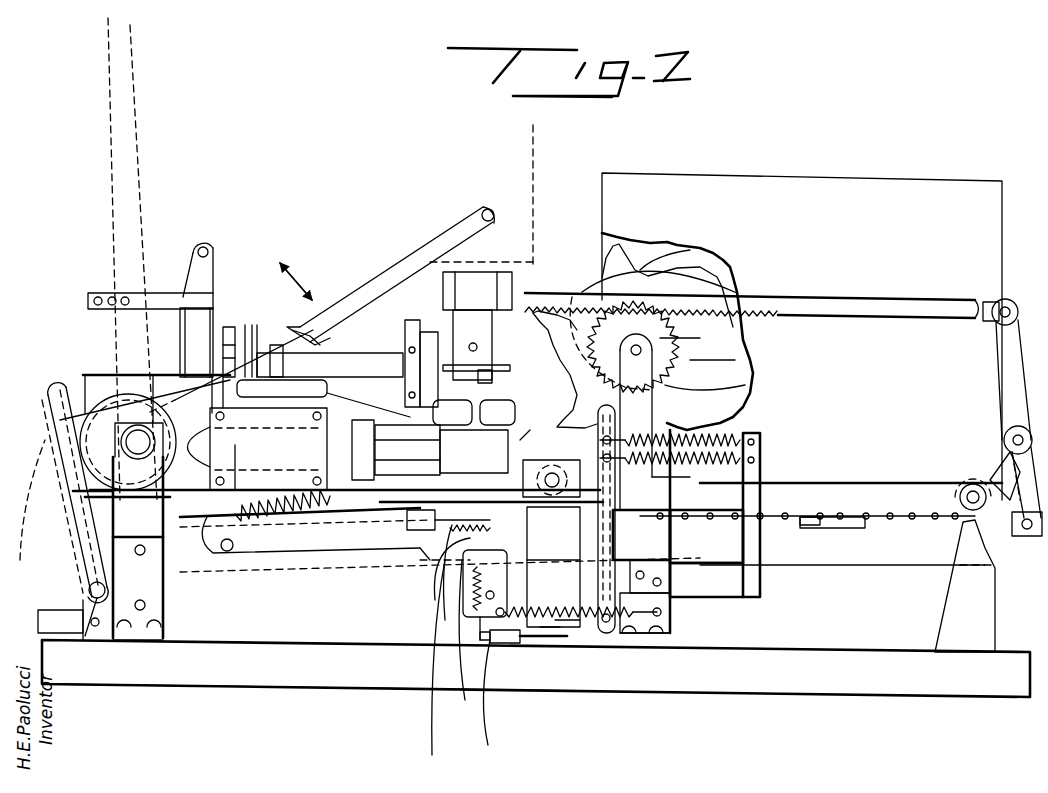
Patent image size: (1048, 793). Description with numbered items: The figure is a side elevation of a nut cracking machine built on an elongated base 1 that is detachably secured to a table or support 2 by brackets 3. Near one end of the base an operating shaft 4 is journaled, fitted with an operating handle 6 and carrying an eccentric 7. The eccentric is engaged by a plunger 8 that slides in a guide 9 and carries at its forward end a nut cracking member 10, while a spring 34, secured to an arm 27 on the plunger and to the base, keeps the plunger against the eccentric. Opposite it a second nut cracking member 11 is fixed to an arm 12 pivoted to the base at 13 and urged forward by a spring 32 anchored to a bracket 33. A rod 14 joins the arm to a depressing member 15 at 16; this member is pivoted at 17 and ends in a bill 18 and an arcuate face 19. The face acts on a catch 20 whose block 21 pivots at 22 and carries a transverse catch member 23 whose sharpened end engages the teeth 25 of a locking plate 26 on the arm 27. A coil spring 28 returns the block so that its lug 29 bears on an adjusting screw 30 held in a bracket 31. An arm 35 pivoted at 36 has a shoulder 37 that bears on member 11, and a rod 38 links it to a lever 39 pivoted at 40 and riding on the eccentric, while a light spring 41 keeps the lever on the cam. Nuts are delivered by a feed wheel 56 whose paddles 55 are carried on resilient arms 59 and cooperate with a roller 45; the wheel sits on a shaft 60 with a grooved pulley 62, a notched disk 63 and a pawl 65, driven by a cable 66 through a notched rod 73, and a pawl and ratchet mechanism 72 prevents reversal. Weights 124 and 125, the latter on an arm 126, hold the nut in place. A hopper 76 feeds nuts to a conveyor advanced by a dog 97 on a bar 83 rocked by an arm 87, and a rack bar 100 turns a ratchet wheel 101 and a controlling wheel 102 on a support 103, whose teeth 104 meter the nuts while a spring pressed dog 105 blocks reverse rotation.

The base 1 is at (283, 627).
The table or support 2 is at (343, 670).
The brackets 3 is at (150, 630).
The operating shaft 4 is at (531, 140).
The operating handle 6 is at (338, 303).
The eccentric 7 is at (75, 414).
The plunger 8 is at (200, 453).
The guide 9 is at (268, 449).
The nut cracking member 10 is at (390, 365).
The nut cracking member 11 is at (530, 430).
The arm 12 is at (553, 566).
The pivot 13 is at (560, 627).
The rod 14 is at (360, 552).
The depressing member 15 is at (303, 560).
The pivot 16 is at (217, 507).
The pivot 17 is at (230, 560).
The bill 18 is at (480, 525).
The arcuate face 19 is at (452, 572).
The catch 20 is at (446, 672).
The block 21 is at (485, 583).
The pivot 22 is at (482, 625).
The catch member 23 is at (505, 555).
The teeth 25 is at (415, 565).
The locking plate 26 is at (390, 570).
The arm 27 is at (405, 500).
The coil spring 28 is at (560, 615).
The lug 29 is at (486, 705).
The adjusting screw 30 is at (520, 622).
The bracket 31 is at (515, 643).
The spring 32 is at (690, 468).
The bracket 33 is at (762, 468).
The spring 34 is at (285, 522).
The arm 35 is at (604, 553).
The pivot 36 is at (636, 640).
The shoulder 37 is at (613, 483).
The rod 38 is at (553, 567).
The lever 39 is at (62, 487).
The pivot 40 is at (95, 612).
The spring 41 is at (720, 430).
The roller 45 is at (507, 473).
The paddles 55 is at (510, 285).
The feed wheel 56 is at (492, 340).
The resilient arms 59 is at (472, 345).
The shaft 60 is at (340, 360).
The grooved pulley 62 is at (250, 340).
The disk 63 is at (186, 375).
The pawl 65 is at (230, 327).
The cable 66 is at (315, 327).
The pawl and ratchet mechanism 72 is at (500, 365).
The notched rod 73 is at (202, 273).
The hopper 76 is at (925, 183).
The bar 83 is at (855, 528).
The arm 87 is at (806, 527).
The dog 97 is at (830, 514).
The rack bar 100 is at (870, 298).
The ratchet wheel 101 is at (700, 338).
The controlling wheel 102 is at (660, 290).
The support 103 is at (712, 280).
The teeth 104 is at (745, 385).
The spring pressed dog 105 is at (735, 360).
The weight 124 is at (498, 412).
The weight 125 is at (452, 412).
The arm 126 is at (323, 397).